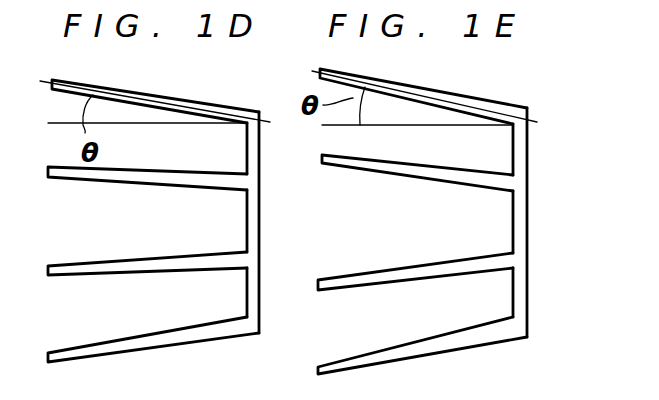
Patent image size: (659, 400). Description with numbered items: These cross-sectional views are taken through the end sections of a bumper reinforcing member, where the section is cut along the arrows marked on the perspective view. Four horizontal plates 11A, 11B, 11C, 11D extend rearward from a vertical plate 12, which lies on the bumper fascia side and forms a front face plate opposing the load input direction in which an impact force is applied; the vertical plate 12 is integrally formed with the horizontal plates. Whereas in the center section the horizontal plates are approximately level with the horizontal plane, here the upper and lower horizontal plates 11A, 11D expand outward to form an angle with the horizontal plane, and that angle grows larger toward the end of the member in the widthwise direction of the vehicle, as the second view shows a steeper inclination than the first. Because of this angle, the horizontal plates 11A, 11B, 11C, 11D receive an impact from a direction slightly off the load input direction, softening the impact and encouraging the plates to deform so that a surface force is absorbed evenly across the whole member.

In FIG. 1D, the horizontal plate 11A is at (185, 100).
In FIG. 1E, the horizontal plate 11A is at (465, 97).
In FIG. 1D, the horizontal plate 11B is at (152, 142).
In FIG. 1E, the horizontal plate 11B is at (425, 166).
In FIG. 1D, the horizontal plate 11C is at (143, 259).
In FIG. 1E, the horizontal plate 11C is at (398, 269).
In FIG. 1D, the horizontal plate 11D is at (142, 336).
In FIG. 1E, the horizontal plate 11D is at (394, 347).
In FIG. 1D, the vertical plate 12 is at (259, 195).
In FIG. 1E, the vertical plate 12 is at (527, 202).